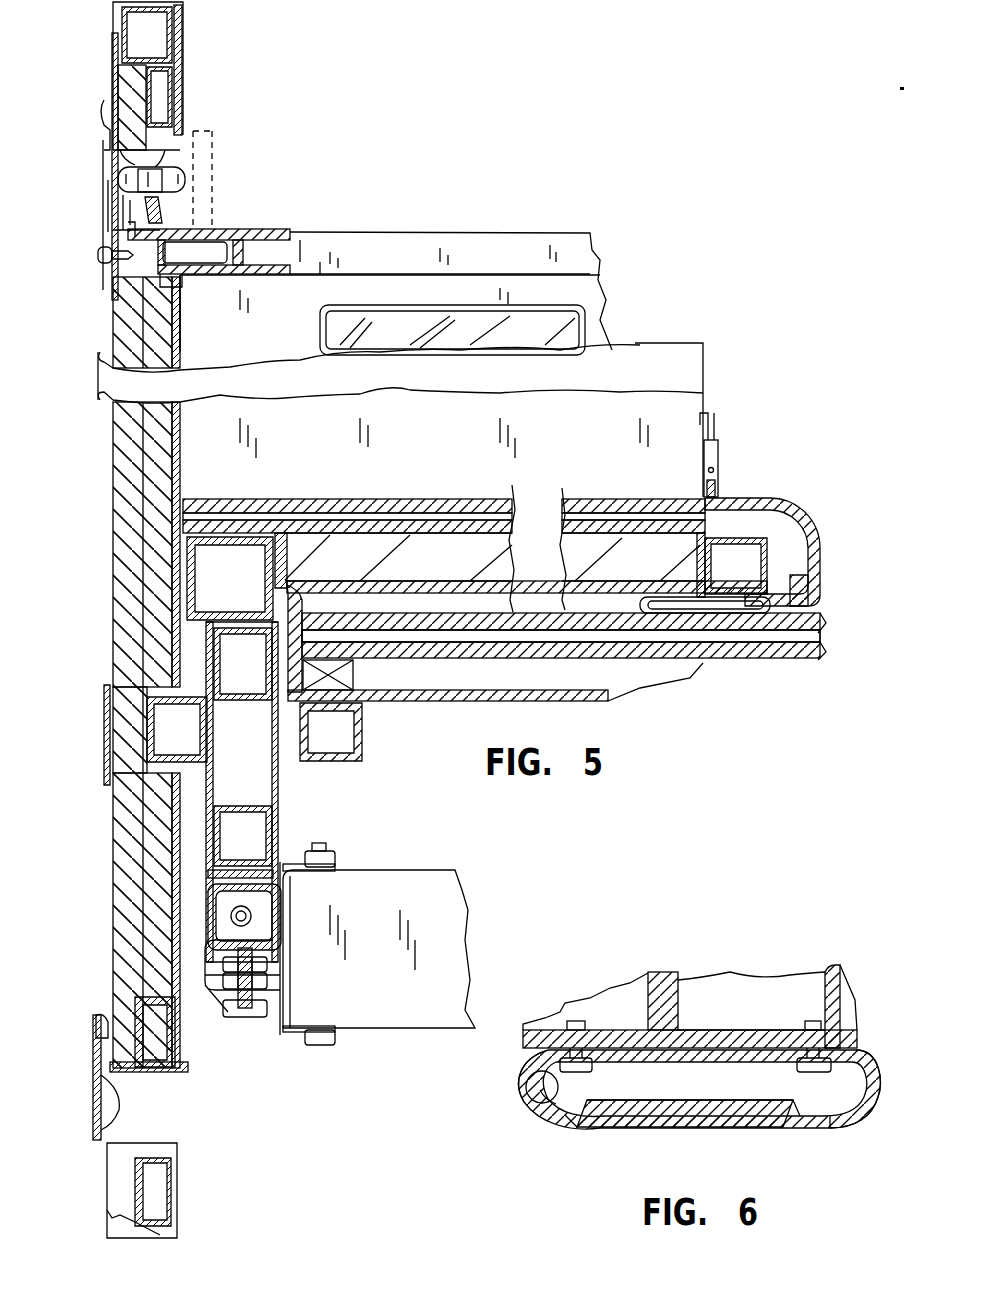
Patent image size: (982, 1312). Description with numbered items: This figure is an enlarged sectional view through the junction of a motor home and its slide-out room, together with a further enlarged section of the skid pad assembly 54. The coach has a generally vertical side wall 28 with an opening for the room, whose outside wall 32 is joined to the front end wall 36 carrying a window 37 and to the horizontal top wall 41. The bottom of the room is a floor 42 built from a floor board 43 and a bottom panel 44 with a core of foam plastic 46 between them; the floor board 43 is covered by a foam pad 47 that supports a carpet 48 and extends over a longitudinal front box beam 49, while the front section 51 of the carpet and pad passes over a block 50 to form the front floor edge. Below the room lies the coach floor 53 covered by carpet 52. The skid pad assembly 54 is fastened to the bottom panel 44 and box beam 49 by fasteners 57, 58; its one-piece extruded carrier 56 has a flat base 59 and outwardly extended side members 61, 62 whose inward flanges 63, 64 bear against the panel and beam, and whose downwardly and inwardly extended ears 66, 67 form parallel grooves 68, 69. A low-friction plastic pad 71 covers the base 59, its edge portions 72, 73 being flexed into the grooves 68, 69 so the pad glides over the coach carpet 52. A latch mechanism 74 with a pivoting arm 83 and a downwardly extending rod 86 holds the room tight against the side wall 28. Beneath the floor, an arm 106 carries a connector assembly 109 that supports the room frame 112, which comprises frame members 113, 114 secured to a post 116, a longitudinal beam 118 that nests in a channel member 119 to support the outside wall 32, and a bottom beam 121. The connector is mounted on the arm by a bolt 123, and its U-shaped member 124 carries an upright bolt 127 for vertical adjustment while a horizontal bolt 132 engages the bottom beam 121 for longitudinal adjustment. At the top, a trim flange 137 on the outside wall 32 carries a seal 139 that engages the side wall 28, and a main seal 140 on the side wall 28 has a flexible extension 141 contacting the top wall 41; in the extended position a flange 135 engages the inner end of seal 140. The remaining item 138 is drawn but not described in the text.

In FIG. 5, the side wall 28 is at (178, 45).
In FIG. 5, the outside wall 32 is at (113, 612).
In FIG. 5, the front end wall 36 is at (598, 312).
In FIG. 5, the window 37 is at (500, 340).
In FIG. 5, the top wall 41 is at (457, 252).
In FIG. 5, the floor 42 is at (806, 465).
In FIG. 5, the floor board 43 is at (642, 528).
In FIG. 5, the bottom panel 44 is at (415, 592).
In FIG. 6, the bottom panel 44 is at (615, 1042).
In FIG. 5, the core of foam plastic 46 is at (587, 569).
In FIG. 5, the foam pad 47 is at (280, 500).
In FIG. 5, the carpet 48 is at (573, 502).
In FIG. 5, the front box beam 49 is at (775, 572).
In FIG. 6, the front box beam 49 is at (832, 993).
In FIG. 5, the block 50 is at (783, 553).
In FIG. 5, the front section 51 is at (814, 590).
In FIG. 5, the carpet 52 is at (818, 626).
In FIG. 5, the coach floor 53 is at (782, 655).
In FIG. 5, the skid pad assembly 54 is at (616, 604).
In FIG. 6, the skid pad assembly 54 is at (514, 1129).
In FIG. 6, the carrier 56 is at (861, 1049).
In FIG. 6, the fastener 57 is at (574, 1070).
In FIG. 6, the fastener 58 is at (805, 1070).
In FIG. 6, the base 59 is at (712, 1093).
In FIG. 6, the side member 61 is at (513, 1071).
In FIG. 6, the side member 62 is at (868, 1077).
In FIG. 6, the flange 63 is at (592, 1052).
In FIG. 6, the flange 64 is at (793, 1053).
In FIG. 6, the ear 66 is at (546, 1094).
In FIG. 6, the ear 67 is at (838, 1112).
In FIG. 6, the groove 68 is at (555, 1088).
In FIG. 6, the groove 69 is at (870, 1099).
In FIG. 5, the pad 71 is at (705, 613).
In FIG. 6, the pad 71 is at (637, 1117).
In FIG. 6, the edge portion 72 is at (563, 1103).
In FIG. 6, the edge portion 73 is at (810, 1110).
In FIG. 5, the latch mechanism 74 is at (718, 445).
In FIG. 5, the pivoting arm 83 is at (716, 420).
In FIG. 5, the rod 86 is at (718, 492).
In FIG. 5, the arm 106 is at (440, 927).
In FIG. 5, the connector assembly 109 is at (209, 1030).
In FIG. 5, the room frame 112 is at (284, 805).
In FIG. 5, the frame member 113 is at (240, 612).
In FIG. 5, the frame member 114 is at (280, 840).
In FIG. 5, the post 116 is at (253, 752).
In FIG. 5, the beam 118 is at (183, 757).
In FIG. 5, the channel member 119 is at (162, 770).
In FIG. 5, the bottom beam 121 is at (210, 948).
In FIG. 5, the bolt 123 is at (340, 849).
In FIG. 5, the U-shaped member 124 is at (218, 975).
In FIG. 5, the bolt 127 is at (247, 1015).
In FIG. 5, the bolt 132 is at (232, 915).
In FIG. 5, the flange 135 is at (212, 131).
In FIG. 5, the trim flange 137 is at (108, 118).
In FIG. 5, the fastener 138 is at (97, 257).
In FIG. 5, the seal 139 is at (118, 125).
In FIG. 5, the main seal 140 is at (183, 180).
In FIG. 5, the extension 141 is at (162, 213).